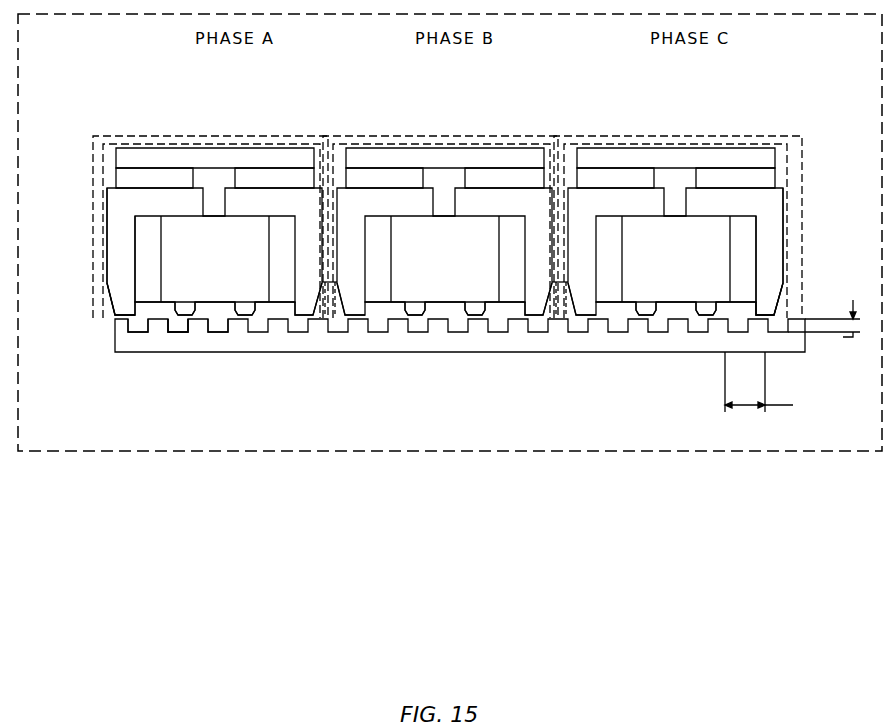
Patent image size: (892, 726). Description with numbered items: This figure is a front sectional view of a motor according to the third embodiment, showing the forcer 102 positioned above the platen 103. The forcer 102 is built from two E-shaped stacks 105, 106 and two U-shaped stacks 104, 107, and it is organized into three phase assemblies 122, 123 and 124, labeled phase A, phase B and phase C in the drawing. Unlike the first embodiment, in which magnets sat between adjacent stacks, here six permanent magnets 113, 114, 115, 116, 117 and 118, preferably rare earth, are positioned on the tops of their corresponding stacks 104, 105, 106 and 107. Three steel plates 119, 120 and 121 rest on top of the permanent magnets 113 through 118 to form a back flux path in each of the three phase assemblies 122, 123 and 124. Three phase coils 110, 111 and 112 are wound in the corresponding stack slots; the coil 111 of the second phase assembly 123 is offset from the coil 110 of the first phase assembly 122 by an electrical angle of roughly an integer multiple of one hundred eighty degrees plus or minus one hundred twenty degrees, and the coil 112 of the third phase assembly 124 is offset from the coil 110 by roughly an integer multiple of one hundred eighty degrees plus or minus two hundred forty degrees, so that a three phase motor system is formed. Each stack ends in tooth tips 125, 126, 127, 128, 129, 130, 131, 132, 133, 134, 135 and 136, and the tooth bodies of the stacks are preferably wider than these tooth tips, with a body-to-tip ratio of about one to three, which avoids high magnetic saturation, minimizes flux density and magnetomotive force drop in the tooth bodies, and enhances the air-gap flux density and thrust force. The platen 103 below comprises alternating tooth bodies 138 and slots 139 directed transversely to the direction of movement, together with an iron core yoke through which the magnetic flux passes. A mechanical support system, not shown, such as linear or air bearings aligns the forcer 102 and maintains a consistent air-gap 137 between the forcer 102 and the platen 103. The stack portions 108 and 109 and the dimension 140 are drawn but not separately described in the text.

The forcer 102 is at (788, 148).
The platen 103 is at (792, 342).
The U-shaped stack 104 is at (122, 218).
The E-shaped stack 105 is at (333, 236).
The E-shaped stack 106 is at (561, 236).
The U-shaped stack 107 is at (745, 207).
The core leg 108 is at (122, 285).
The core leg 109 is at (768, 238).
The phase coil 110 is at (183, 278).
The phase coil 111 is at (441, 273).
The phase coil 112 is at (720, 285).
The permanent magnet 113 is at (128, 178).
The permanent magnet 114 is at (288, 175).
The permanent magnet 115 is at (397, 173).
The permanent magnet 116 is at (495, 173).
The permanent magnet 117 is at (608, 178).
The permanent magnet 118 is at (745, 178).
The steel plate 119 is at (216, 158).
The steel plate 120 is at (455, 157).
The steel plate 121 is at (673, 155).
The first phase assembly 122 is at (187, 140).
The second phase assembly 123 is at (437, 140).
The third phase assembly 124 is at (706, 142).
The tooth tip 125 is at (125, 305).
The tooth tip 126 is at (187, 313).
The tooth tip 127 is at (245, 307).
The tooth tip 128 is at (306, 306).
The tooth tip 129 is at (357, 305).
The tooth tip 130 is at (413, 303).
The tooth tip 131 is at (480, 305).
The tooth tip 132 is at (530, 310).
The tooth tip 133 is at (582, 310).
The tooth tip 134 is at (643, 313).
The tooth tip 135 is at (707, 313).
The tooth tip 136 is at (767, 312).
The air-gap 137 is at (824, 322).
The tooth body 138 is at (205, 325).
The slot 139 is at (183, 322).
The slot pitch 140 is at (773, 382).